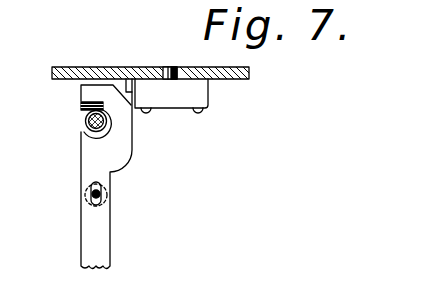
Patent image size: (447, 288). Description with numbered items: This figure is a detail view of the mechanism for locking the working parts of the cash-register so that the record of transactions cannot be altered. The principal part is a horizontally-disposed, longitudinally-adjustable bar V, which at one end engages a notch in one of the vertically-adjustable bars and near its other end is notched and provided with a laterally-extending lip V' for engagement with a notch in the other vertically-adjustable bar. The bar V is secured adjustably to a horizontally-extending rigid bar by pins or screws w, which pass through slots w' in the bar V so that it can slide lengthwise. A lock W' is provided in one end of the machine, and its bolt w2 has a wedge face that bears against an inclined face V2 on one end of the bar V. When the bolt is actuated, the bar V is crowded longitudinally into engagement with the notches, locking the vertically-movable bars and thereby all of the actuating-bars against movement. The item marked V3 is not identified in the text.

The bar V is at (111, 174).
The laterally-extending lip V' is at (72, 101).
The inclined face V2 is at (122, 88).
The pivot pin V3 is at (92, 122).
The lock W' is at (175, 109).
The bolt w2 is at (132, 91).
The pins or screws w is at (112, 194).
The slots w' is at (72, 190).